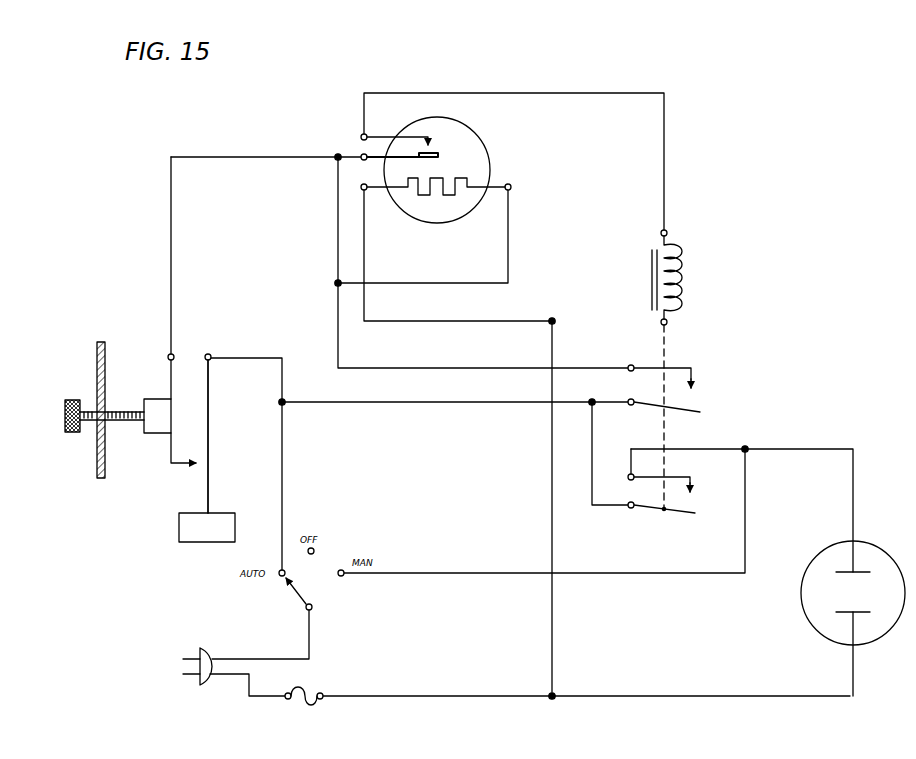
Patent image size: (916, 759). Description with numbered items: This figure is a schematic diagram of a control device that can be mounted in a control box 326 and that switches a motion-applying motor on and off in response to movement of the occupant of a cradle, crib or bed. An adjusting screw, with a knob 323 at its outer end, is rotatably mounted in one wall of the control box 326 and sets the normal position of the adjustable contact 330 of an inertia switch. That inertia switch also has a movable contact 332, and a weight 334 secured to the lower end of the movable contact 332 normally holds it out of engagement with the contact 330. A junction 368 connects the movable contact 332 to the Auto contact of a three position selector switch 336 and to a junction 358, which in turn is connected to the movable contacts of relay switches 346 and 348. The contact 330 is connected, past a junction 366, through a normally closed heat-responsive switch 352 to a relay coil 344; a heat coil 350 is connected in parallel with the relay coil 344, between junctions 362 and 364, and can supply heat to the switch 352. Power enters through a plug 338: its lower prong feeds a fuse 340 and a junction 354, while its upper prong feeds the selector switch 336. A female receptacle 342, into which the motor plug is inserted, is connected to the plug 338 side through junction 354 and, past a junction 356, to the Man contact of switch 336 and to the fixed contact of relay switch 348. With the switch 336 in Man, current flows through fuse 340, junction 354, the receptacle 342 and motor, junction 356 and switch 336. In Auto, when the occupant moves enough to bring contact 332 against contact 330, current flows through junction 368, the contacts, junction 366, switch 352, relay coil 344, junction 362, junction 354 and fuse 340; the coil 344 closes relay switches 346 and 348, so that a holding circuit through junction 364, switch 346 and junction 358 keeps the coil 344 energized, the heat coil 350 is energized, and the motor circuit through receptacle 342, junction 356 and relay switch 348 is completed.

The adjusting knob 323 is at (61, 422).
The control box 326 is at (96, 474).
The adjustable contact 330 is at (188, 468).
The movable contact 332 is at (211, 497).
The weight 334 is at (176, 541).
The three position selector switch 336 is at (297, 597).
The plug 338 is at (198, 680).
The fuse 340 is at (313, 692).
The female receptacle 342 is at (804, 621).
The relay coil 344 is at (679, 290).
The relay switch 346 is at (701, 384).
The relay switch 348 is at (704, 477).
The heat coil 350 is at (445, 197).
The heat-responsive switch 352 is at (416, 137).
The junction 354 is at (556, 691).
The junction 356 is at (752, 444).
The junction 358 is at (590, 406).
The junction 362 is at (552, 318).
The junction 364 is at (335, 285).
The junction 366 is at (334, 153).
The junction 368 is at (285, 405).